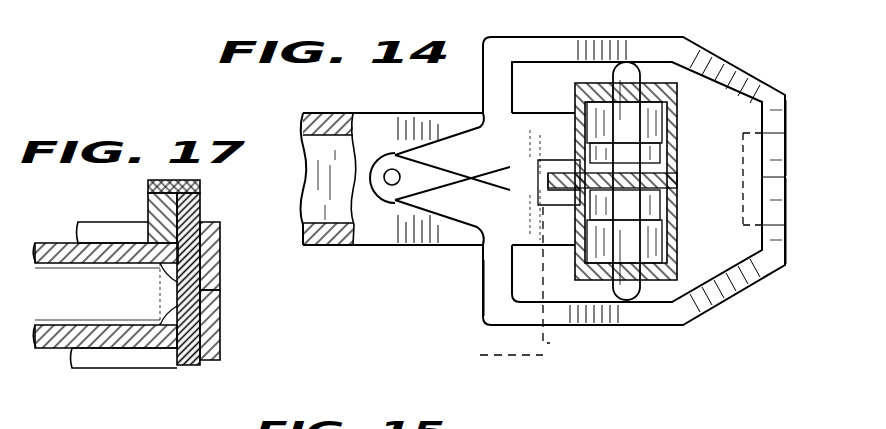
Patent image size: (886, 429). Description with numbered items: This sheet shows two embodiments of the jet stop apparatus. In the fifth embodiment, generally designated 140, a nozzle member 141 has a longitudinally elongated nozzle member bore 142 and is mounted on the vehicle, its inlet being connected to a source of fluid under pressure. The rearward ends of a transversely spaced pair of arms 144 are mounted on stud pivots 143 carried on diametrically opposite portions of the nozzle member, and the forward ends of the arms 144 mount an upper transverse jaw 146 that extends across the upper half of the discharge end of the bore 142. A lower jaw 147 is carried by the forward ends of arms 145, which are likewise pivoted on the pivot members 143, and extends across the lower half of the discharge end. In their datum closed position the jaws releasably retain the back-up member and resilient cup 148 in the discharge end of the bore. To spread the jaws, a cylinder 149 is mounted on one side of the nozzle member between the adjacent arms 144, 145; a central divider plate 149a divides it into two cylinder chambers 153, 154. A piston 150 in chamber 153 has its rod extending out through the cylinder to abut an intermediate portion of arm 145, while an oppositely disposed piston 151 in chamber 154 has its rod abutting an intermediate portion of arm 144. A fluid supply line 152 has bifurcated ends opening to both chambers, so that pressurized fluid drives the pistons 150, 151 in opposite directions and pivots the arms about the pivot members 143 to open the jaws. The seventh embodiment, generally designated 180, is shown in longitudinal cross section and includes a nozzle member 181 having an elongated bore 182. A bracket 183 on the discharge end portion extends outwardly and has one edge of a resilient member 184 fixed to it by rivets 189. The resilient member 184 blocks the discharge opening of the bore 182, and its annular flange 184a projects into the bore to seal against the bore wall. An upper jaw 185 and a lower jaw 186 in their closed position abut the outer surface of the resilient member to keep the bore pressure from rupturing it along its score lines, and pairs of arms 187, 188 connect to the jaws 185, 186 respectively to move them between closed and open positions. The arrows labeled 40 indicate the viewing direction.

In FIG. 14, the direction arrow 40 is at (765, 304).
In FIG. 17, the direction arrow 40 is at (123, 383).
In FIG. 14, the jet stop apparatus 140 is at (372, 250).
In FIG. 14, the nozzle member 141 is at (423, 240).
In FIG. 14, the nozzle member bore 142 is at (320, 247).
In FIG. 14, the stud pivots 143 is at (393, 185).
In FIG. 14, the arms 144 is at (493, 72).
In FIG. 14, the arms 145 is at (495, 287).
In FIG. 14, the upper transverse jaw 146 is at (785, 137).
In FIG. 14, the lower jaw 147 is at (782, 242).
In FIG. 14, the back-up member and resilient cup 148 is at (747, 167).
In FIG. 14, the cylinder 149 is at (672, 100).
In FIG. 14, the central divider plate 149a is at (653, 183).
In FIG. 14, the piston 150 is at (632, 302).
In FIG. 14, the piston 151 is at (633, 63).
In FIG. 14, the fluid supply line 152 is at (550, 343).
In FIG. 14, the cylinder chamber 153 is at (668, 233).
In FIG. 14, the cylinder chamber 154 is at (580, 128).
In FIG. 17, the jet stop apparatus 180 is at (47, 348).
In FIG. 17, the nozzle member 181 is at (47, 243).
In FIG. 17, the bore 182 is at (88, 265).
In FIG. 17, the bracket 183 is at (152, 213).
In FIG. 17, the resilient member 184 is at (180, 367).
In FIG. 17, the annular flange 184a is at (160, 270).
In FIG. 17, the upper jaw 185 is at (213, 258).
In FIG. 17, the lower jaw 186 is at (220, 348).
In FIG. 17, the arms 187 is at (97, 363).
In FIG. 17, the arms 188 is at (88, 227).
In FIG. 17, the rivets 189 is at (197, 188).